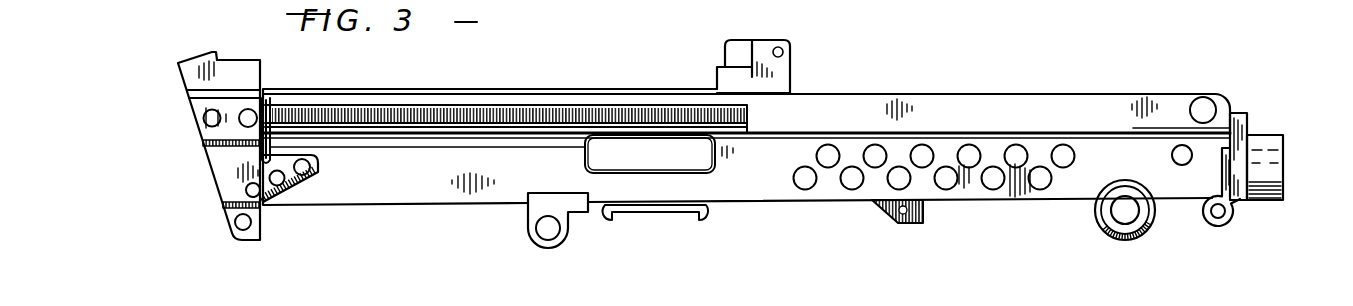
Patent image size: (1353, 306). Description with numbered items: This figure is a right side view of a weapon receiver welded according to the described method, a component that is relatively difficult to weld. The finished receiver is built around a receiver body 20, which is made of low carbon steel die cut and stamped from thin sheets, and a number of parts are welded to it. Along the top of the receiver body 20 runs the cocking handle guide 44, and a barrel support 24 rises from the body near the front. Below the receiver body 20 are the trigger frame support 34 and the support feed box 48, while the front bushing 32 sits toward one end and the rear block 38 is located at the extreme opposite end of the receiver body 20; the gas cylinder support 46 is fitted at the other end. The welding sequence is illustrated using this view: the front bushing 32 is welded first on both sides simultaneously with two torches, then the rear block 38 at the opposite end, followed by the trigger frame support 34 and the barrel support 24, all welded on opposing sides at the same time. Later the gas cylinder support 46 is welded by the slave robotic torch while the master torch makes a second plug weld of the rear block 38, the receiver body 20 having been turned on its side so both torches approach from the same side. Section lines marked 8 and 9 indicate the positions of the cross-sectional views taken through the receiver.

The section line 8- 8 is at (192, 263).
The section line 9- 9 is at (570, 285).
The receiver body 20 is at (938, 94).
The barrel support 24 is at (789, 61).
The front bushing 32 is at (1097, 210).
The trigger frame support 34 is at (527, 227).
The rear block 38 is at (262, 218).
The cocking handle guide 44 is at (628, 96).
The gas cylinder support 46 is at (1284, 138).
The support feed box 48 is at (708, 213).